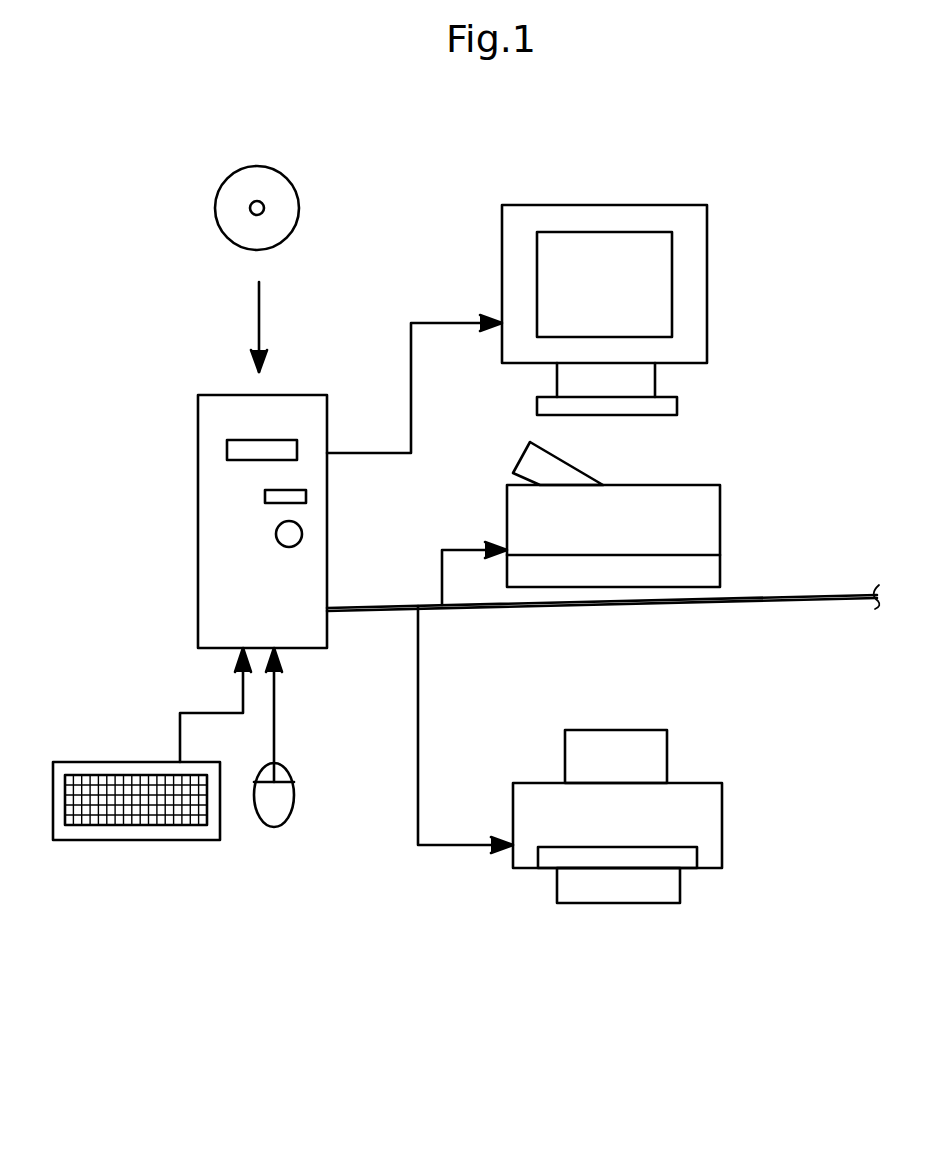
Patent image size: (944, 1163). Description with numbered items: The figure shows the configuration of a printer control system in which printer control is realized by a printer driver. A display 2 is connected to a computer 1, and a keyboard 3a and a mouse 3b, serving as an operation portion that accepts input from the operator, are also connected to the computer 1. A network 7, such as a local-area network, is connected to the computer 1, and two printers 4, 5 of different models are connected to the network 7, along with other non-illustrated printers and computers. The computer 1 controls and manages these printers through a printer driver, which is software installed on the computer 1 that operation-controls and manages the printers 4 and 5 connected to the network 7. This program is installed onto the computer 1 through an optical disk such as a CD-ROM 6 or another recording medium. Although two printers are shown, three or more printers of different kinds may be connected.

The computer 1 is at (217, 395).
The display 2 is at (602, 205).
The keyboard 3a is at (165, 840).
The mouse 3b is at (287, 825).
The printer 4 is at (673, 485).
The printer 5 is at (700, 782).
The CD-ROM 6 is at (257, 167).
The network 7 is at (829, 594).